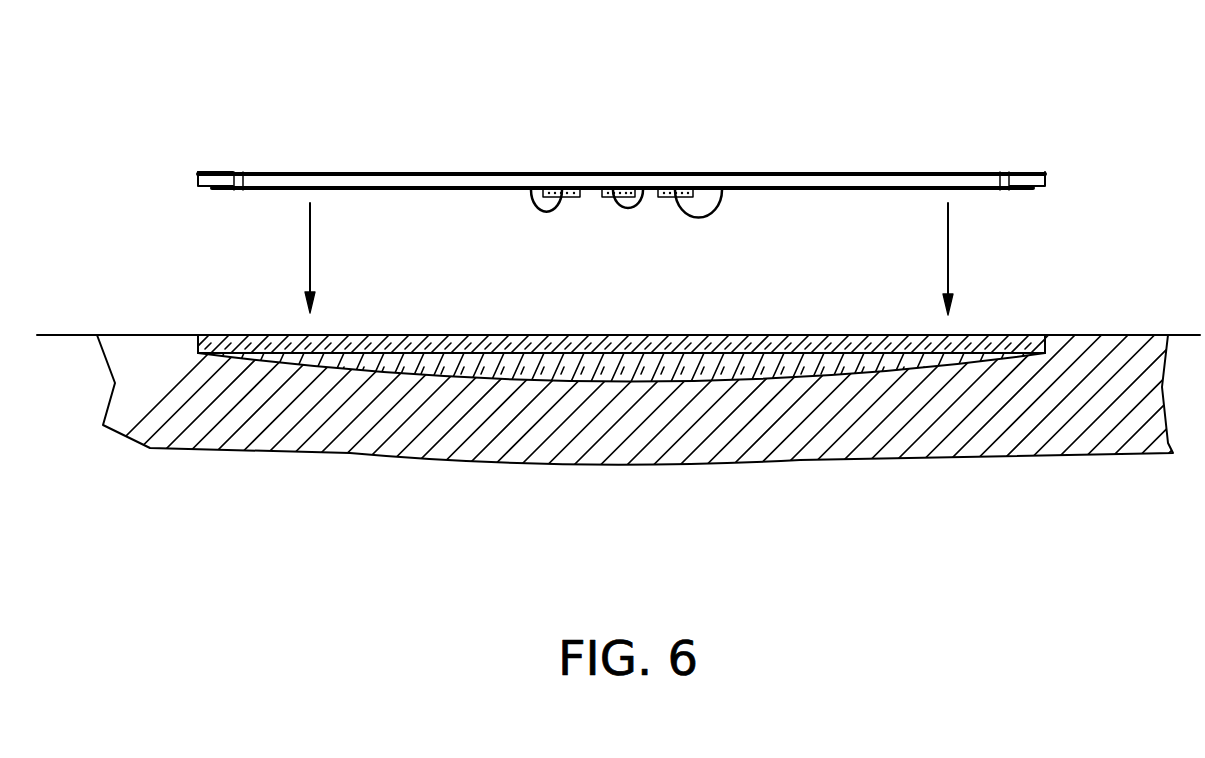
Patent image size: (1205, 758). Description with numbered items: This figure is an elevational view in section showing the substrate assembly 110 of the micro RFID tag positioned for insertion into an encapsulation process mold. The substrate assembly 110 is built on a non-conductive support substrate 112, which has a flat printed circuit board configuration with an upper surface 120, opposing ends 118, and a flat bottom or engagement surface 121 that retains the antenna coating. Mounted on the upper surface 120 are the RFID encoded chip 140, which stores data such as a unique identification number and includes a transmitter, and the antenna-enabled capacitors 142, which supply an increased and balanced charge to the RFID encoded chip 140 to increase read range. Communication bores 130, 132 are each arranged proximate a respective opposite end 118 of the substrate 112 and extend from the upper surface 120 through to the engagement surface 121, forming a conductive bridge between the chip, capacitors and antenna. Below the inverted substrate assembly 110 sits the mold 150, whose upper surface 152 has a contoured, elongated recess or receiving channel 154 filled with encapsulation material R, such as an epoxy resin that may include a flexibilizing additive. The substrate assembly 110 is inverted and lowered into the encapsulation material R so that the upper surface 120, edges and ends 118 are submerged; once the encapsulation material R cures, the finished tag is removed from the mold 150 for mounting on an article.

The substrate assembly 110 is at (653, 205).
The support substrate 112 is at (395, 150).
The opposing ends 118 is at (198, 177).
The upper surface 120 is at (1034, 189).
The engagement surface 121 is at (210, 160).
The communication bore 130 is at (241, 172).
The communication bore 132 is at (1002, 177).
The RFID encoded chip 140 is at (643, 193).
The antenna-enabled capacitors 142 is at (534, 197).
The mold 150 is at (621, 357).
The upper surface 152 is at (1087, 335).
The receiving channel 154 is at (993, 343).
The encapsulation material R is at (427, 373).